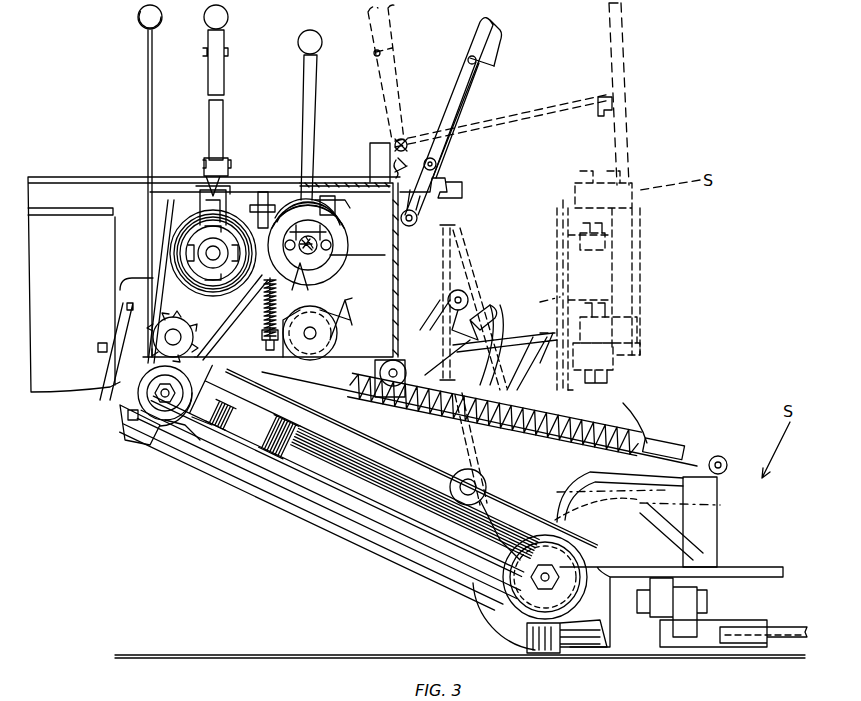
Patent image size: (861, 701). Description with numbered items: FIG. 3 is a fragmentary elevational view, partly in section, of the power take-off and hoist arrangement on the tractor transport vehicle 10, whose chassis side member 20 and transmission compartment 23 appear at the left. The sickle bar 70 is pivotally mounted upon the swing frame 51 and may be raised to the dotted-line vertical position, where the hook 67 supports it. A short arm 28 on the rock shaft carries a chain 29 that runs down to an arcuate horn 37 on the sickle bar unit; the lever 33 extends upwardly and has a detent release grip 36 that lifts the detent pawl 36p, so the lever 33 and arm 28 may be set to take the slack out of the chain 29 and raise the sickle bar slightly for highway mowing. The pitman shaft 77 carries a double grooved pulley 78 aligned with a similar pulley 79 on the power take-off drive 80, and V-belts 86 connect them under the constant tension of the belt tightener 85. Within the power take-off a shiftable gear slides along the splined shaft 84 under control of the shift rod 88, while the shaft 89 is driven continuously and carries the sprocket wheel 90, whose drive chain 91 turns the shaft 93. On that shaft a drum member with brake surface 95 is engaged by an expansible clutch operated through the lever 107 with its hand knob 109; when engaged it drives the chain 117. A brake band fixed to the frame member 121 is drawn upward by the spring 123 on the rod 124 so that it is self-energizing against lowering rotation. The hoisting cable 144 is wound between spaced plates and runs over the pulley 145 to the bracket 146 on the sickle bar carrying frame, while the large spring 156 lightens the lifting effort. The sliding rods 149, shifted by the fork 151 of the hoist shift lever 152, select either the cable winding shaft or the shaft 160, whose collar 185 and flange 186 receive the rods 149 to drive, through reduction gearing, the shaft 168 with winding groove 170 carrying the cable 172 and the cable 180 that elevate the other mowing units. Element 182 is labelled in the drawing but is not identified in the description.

The tractor transport vehicle 10 is at (410, 160).
The side member 20 is at (437, 167).
The transmission compartment 23 is at (42, 210).
The short arm 28 is at (440, 214).
The chain 29 is at (468, 262).
The lever 33 is at (382, 68).
The detent release grip 36 is at (395, 25).
The detent pawl 36p is at (443, 190).
The arcuate horn 37 is at (478, 597).
The swing frame 51 is at (333, 490).
The hook 67 is at (543, 112).
The sickle bar 70 is at (634, 97).
The pitman shaft 77 is at (545, 585).
The double grooved pulley 78 is at (520, 585).
The pulley 79 is at (180, 440).
The power take-off drive 80 is at (192, 420).
The splined shaft 84 is at (160, 395).
The belt tightener 85 is at (460, 478).
The V-belts 86 is at (337, 520).
The shift rod 88 is at (135, 433).
The shaft 89 is at (167, 334).
The sprocket wheel 90 is at (205, 320).
The drive chain 91 is at (160, 272).
The shaft 93 is at (188, 230).
The brake drum surface 95 is at (198, 212).
The lever 107 is at (222, 112).
The hand knob 109 is at (205, 250).
The chain 117 is at (333, 200).
The frame member 121 is at (262, 205).
The spring 123 is at (265, 312).
The rod 124 is at (272, 340).
The hoisting cable 144 is at (647, 442).
The pulley 145 is at (326, 332).
The bracket 146 is at (712, 503).
The sliding rods 149 is at (328, 237).
The fork 151 is at (318, 225).
The hoist shift lever 152 is at (313, 104).
The large spring 156 is at (650, 442).
The shaft 160 is at (306, 262).
The shaft 168 is at (127, 689).
The winding groove 170 is at (73, 689).
The cable 172 is at (42, 700).
The cable 180 is at (180, 689).
The element 182 is at (262, 689).
The collar 185 is at (322, 230).
The flange 186 is at (330, 255).